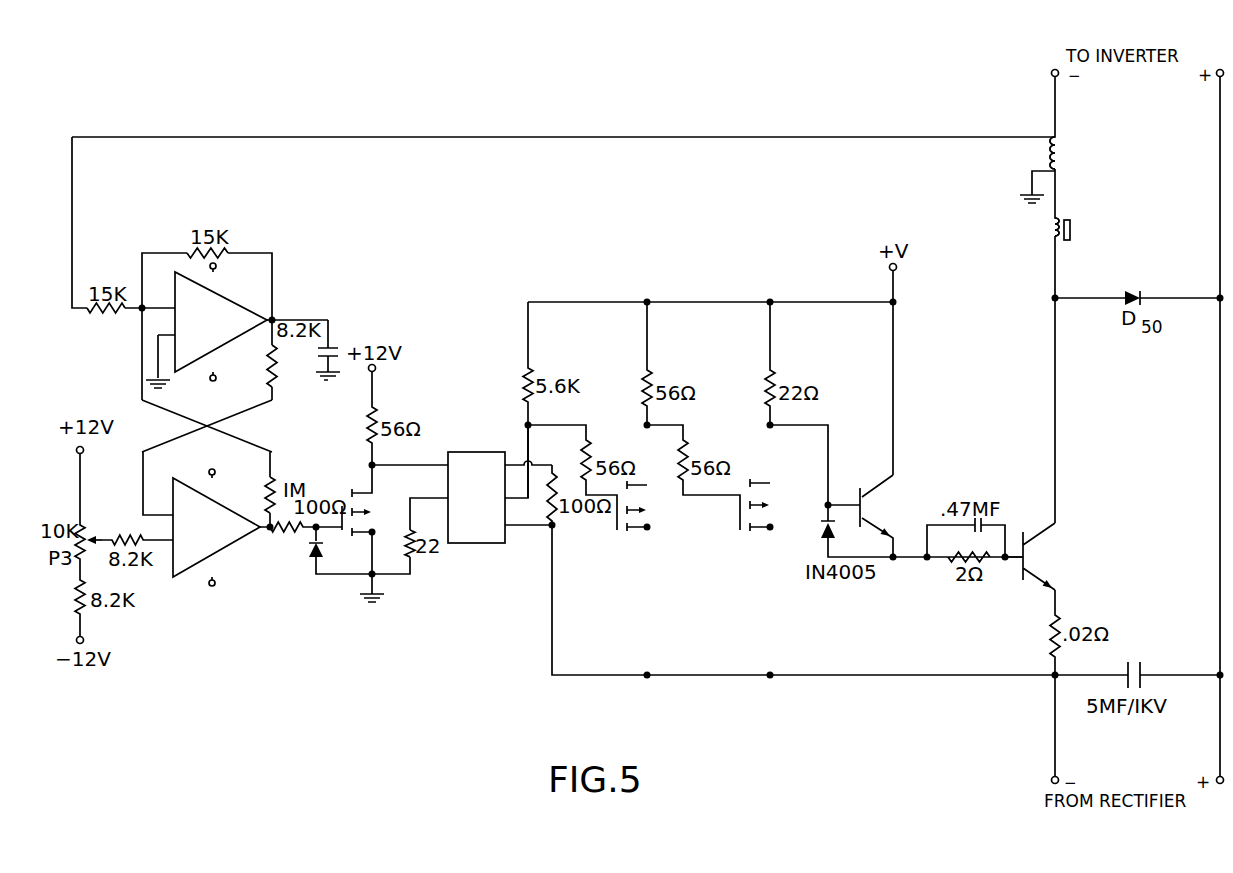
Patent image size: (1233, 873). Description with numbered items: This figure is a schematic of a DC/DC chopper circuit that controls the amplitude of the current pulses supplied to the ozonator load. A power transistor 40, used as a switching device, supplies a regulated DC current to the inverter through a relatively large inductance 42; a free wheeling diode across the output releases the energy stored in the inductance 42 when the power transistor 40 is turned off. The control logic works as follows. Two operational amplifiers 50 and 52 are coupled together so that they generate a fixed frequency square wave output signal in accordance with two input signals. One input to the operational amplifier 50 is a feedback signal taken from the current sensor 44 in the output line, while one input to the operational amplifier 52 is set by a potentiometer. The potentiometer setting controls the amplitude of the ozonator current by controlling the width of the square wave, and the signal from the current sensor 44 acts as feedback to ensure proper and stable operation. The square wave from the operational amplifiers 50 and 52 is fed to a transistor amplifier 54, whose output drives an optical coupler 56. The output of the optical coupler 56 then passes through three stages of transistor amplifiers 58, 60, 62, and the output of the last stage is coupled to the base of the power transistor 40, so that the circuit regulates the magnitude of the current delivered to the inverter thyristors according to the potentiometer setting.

The power transistor 40 is at (1045, 530).
The inductance 42 is at (1072, 230).
The current sensor 44 is at (1062, 170).
The operational amplifier 50 is at (198, 368).
The operational amplifier 52 is at (198, 580).
The transistor amplifier 54 is at (363, 488).
The optical coupler 56 is at (468, 450).
The transistor amplifier 58 is at (612, 521).
The transistor amplifier 60 is at (768, 478).
The transistor amplifier 62 is at (880, 478).